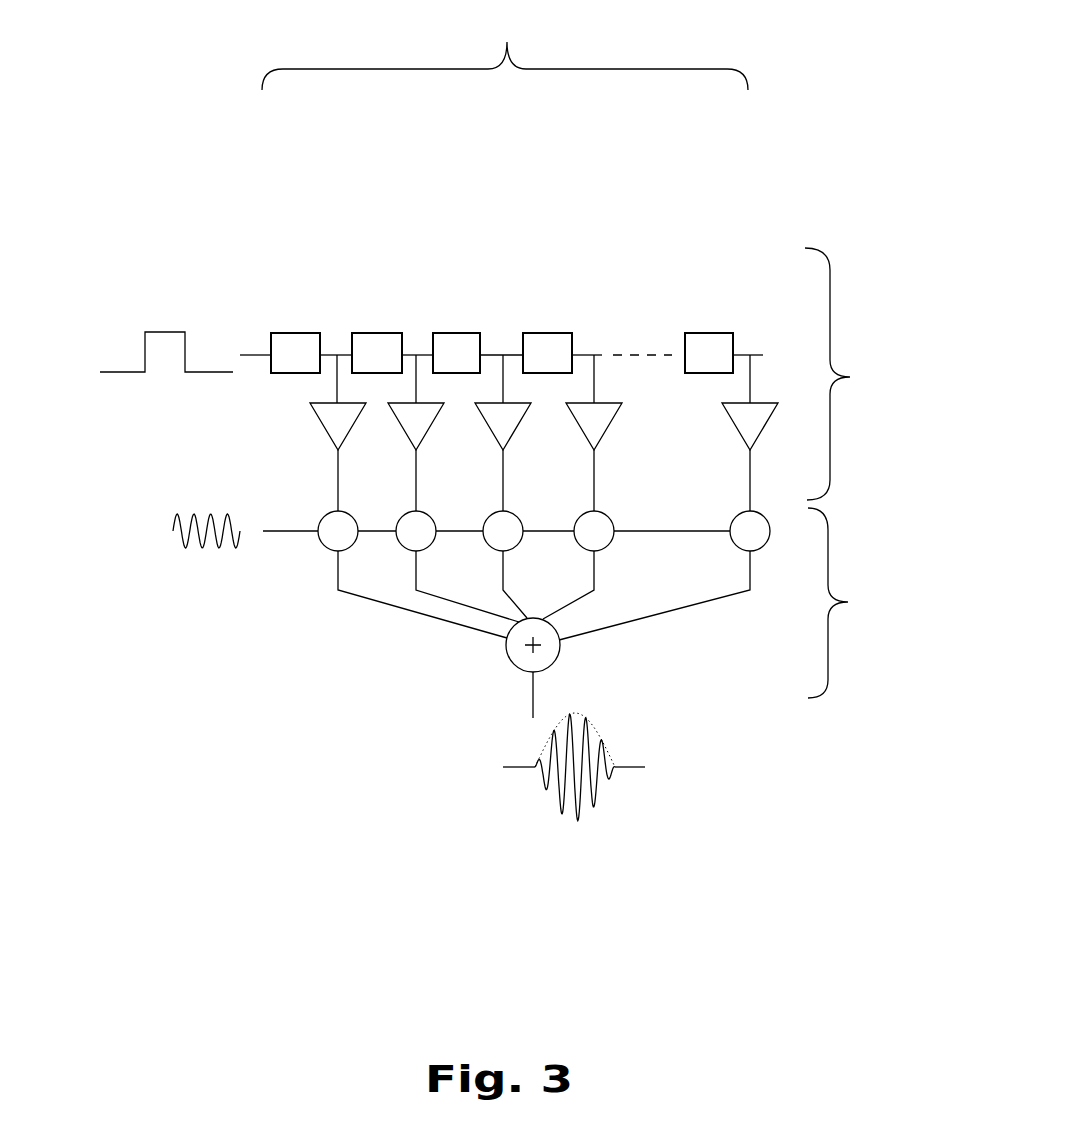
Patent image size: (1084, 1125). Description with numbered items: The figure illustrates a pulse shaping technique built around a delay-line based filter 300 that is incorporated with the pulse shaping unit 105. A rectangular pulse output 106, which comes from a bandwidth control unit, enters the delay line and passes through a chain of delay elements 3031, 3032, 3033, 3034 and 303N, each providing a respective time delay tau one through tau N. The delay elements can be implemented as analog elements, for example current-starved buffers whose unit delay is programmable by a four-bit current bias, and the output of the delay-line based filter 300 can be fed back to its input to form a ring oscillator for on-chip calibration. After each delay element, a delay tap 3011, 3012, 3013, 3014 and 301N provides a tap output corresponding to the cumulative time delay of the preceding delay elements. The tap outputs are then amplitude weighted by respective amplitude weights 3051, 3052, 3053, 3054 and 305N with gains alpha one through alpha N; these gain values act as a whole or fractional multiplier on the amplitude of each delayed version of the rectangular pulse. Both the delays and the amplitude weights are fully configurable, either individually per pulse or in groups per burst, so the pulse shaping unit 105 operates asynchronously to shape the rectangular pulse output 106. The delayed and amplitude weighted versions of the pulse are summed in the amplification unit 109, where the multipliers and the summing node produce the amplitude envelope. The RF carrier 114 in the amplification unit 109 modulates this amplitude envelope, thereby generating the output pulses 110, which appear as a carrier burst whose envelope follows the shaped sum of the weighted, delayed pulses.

The delay-line based filter 300 is at (505, 50).
The rectangular pulse output 106 is at (163, 330).
The first delay element 3031 is at (290, 333).
The second delay element 3032 is at (383, 333).
The third delay element 3033 is at (463, 333).
The fourth delay element 3034 is at (552, 333).
The Nth delay element 303N is at (710, 333).
The first delay tap 3011 is at (338, 350).
The second delay tap 3012 is at (417, 350).
The third delay tap 3013 is at (504, 350).
The fourth delay tap 3014 is at (595, 350).
The Nth delay tap 301N is at (751, 350).
The first amplitude weight 3051 is at (325, 427).
The second amplitude weight 3052 is at (400, 427).
The third amplitude weight 3053 is at (485, 427).
The fourth amplitude weight 3054 is at (578, 427).
The Nth amplitude weight 305N is at (733, 427).
The pulse shaping unit 105 is at (851, 374).
The amplification unit 109 is at (580, 613).
The RF carrier 114 is at (207, 550).
The output pulses 110 is at (552, 793).